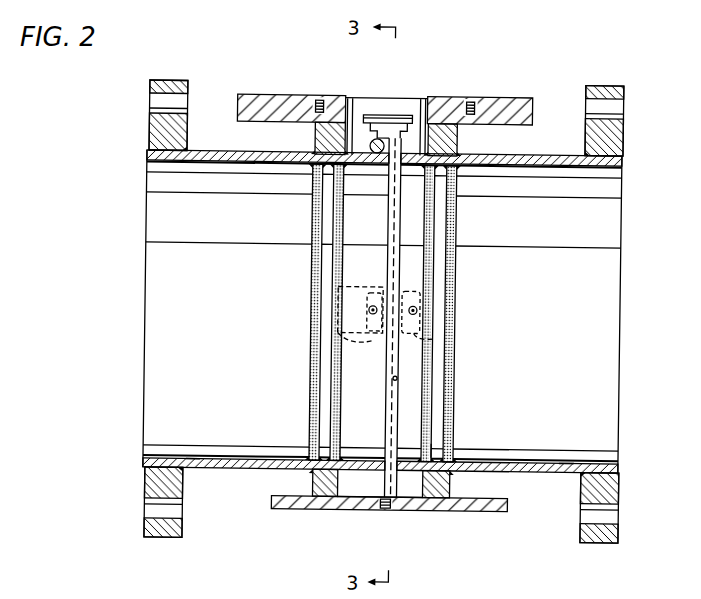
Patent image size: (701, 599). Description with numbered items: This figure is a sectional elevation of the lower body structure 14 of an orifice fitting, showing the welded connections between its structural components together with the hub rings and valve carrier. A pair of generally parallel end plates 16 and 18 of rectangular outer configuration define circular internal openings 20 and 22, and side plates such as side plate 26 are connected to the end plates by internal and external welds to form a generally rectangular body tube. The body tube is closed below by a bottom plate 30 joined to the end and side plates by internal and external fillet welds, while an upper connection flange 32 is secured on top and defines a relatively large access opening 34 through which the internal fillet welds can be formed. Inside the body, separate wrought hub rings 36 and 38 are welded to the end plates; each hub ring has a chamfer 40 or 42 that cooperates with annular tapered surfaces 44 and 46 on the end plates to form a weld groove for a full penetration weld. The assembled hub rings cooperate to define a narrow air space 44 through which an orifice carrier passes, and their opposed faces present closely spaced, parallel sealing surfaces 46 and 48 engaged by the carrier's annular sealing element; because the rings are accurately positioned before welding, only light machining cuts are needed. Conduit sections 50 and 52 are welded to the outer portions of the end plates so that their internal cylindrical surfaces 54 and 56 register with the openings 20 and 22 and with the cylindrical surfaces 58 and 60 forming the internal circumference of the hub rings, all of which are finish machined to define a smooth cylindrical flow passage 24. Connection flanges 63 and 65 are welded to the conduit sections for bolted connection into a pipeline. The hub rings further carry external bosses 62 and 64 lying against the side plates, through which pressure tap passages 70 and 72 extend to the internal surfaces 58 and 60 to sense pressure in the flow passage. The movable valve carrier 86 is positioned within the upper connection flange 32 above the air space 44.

The lower body structure 14 is at (266, 484).
The end plate 16 is at (314, 481).
The end plate 18 is at (456, 481).
The circular internal opening 20 is at (323, 398).
The circular internal opening 22 is at (442, 433).
The cylindrical flow passage 24 is at (159, 308).
The side plate 26 is at (366, 484).
The bottom plate 30 is at (498, 506).
The upper connection flange 32 is at (253, 91).
The access opening 34 is at (356, 92).
The hub ring 36 is at (332, 508).
The hub ring 38 is at (419, 474).
The chamfer 40 is at (341, 455).
The chamfer 42 is at (451, 449).
The annular tapered surface / narrow air space 44 is at (322, 448).
The annular tapered surface / sealing surface 46 is at (391, 397).
The sealing surface 48 is at (400, 375).
The conduit section 50 is at (211, 469).
The conduit section 52 is at (554, 470).
The internal cylindrical surface 54 is at (197, 456).
The internal cylindrical surface 56 is at (571, 458).
The cylindrical surface 58 is at (382, 470).
The cylindrical surface 60 is at (411, 450).
The external boss 62 is at (323, 340).
The connection flange 63 is at (147, 127).
The external boss 64 is at (422, 331).
The connection flange 65 is at (623, 129).
The pressure tap passage 70 is at (371, 307).
The pressure tap passage 72 is at (419, 307).
The valve carrier 86 is at (400, 109).